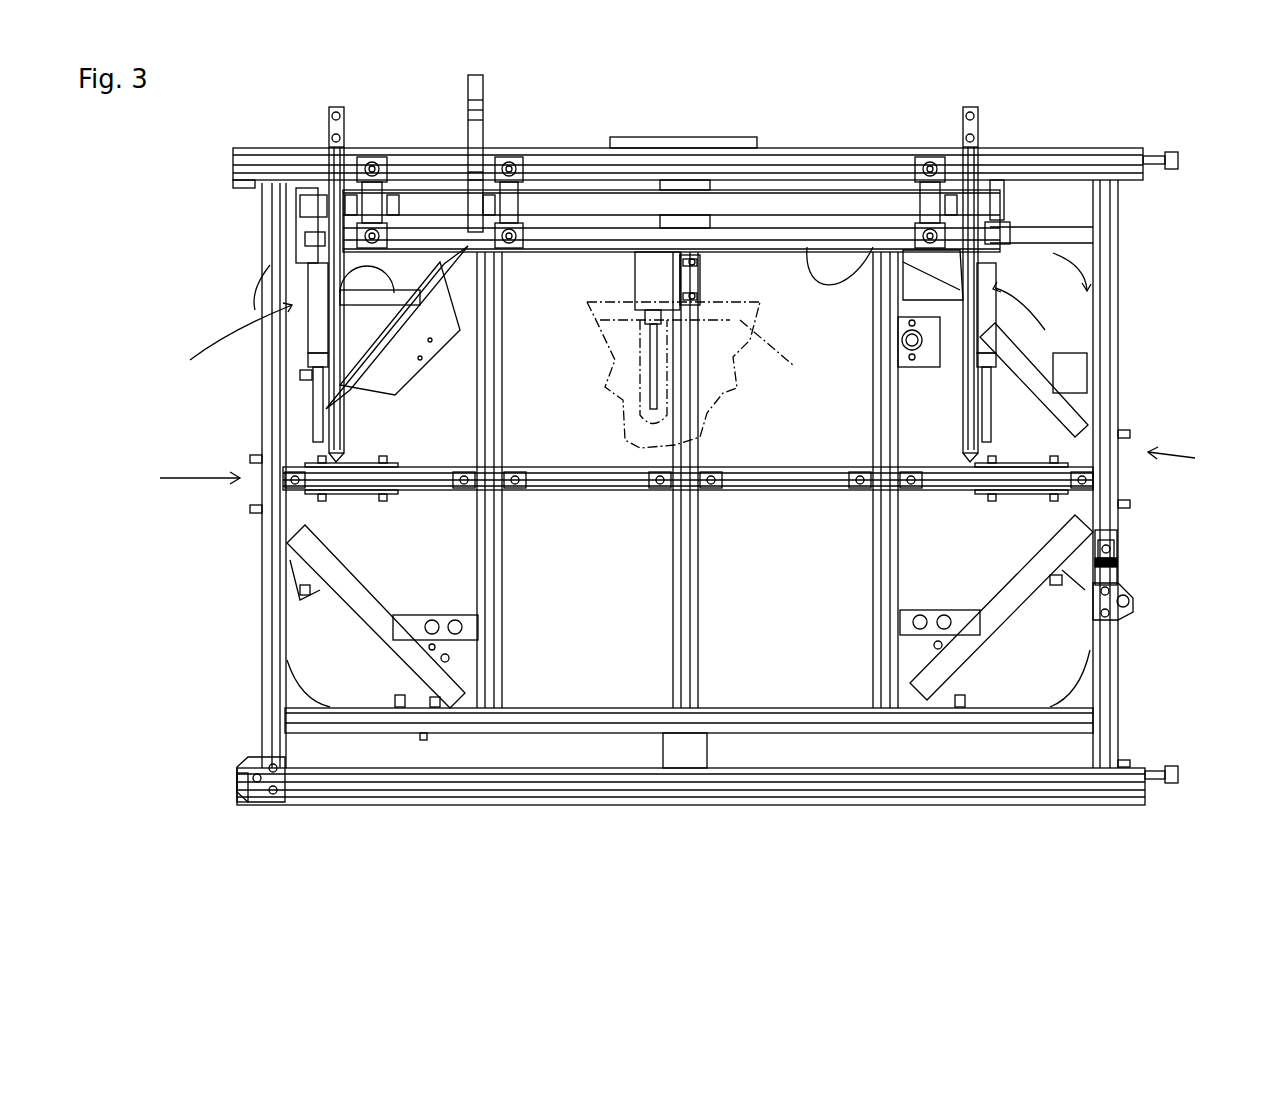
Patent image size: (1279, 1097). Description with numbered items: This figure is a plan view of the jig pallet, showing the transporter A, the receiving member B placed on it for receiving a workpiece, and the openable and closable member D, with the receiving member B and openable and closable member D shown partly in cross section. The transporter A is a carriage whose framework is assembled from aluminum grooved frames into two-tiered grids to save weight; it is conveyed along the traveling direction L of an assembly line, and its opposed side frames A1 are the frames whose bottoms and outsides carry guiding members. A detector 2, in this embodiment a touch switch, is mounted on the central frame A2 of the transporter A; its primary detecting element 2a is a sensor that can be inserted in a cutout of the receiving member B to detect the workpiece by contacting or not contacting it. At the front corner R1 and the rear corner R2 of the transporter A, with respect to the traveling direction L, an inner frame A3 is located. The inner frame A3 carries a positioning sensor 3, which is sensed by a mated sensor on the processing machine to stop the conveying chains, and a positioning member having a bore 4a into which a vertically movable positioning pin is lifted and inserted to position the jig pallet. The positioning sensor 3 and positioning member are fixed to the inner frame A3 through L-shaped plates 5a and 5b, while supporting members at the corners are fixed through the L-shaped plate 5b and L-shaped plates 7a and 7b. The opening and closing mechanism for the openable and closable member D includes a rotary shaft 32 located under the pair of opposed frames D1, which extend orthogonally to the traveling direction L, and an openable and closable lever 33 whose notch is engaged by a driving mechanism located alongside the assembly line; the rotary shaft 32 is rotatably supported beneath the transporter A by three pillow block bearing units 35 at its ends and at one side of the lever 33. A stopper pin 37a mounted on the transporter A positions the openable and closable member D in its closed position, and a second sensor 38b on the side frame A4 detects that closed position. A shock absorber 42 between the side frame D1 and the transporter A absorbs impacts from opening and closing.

The transporter A is at (1195, 458).
The side frames A1 is at (1015, 158).
The central frame A2 is at (700, 630).
The inner frame A3 is at (834, 285).
The side frame A4 is at (268, 603).
The receiving member B is at (702, 375).
The openable and closable member D is at (323, 188).
The opposed frames D1 is at (328, 205).
The traveling direction L is at (185, 482).
The front corner R1 is at (1045, 330).
The rear corner R2 is at (190, 360).
The detector 2 is at (648, 283).
The primary detecting element 2a is at (655, 370).
The positioning sensor 3 is at (353, 267).
The bore 4a is at (907, 343).
The L-shaped plate 5a is at (930, 340).
The L-shaped plate 5b is at (428, 340).
The L-shaped plate 7a is at (930, 637).
The L-shaped plate 7b is at (463, 653).
The rotary shaft 32 is at (585, 200).
The openable and closable lever 33 is at (475, 157).
The pillow block bearing units 35 is at (372, 190).
The stopper pin 37a is at (250, 777).
The second sensor 38b is at (1105, 553).
The shock absorber 42 is at (318, 323).